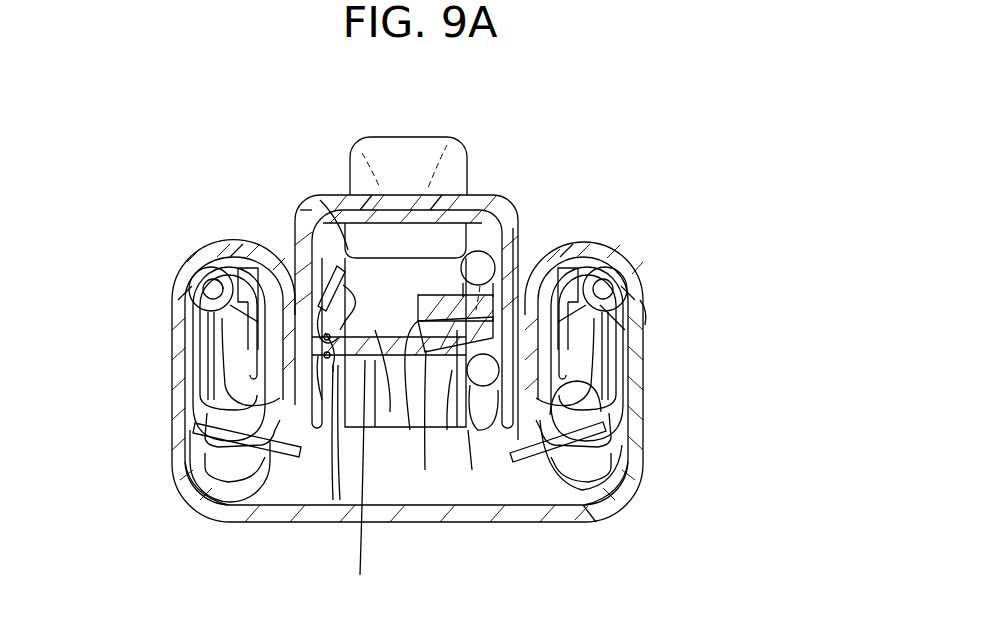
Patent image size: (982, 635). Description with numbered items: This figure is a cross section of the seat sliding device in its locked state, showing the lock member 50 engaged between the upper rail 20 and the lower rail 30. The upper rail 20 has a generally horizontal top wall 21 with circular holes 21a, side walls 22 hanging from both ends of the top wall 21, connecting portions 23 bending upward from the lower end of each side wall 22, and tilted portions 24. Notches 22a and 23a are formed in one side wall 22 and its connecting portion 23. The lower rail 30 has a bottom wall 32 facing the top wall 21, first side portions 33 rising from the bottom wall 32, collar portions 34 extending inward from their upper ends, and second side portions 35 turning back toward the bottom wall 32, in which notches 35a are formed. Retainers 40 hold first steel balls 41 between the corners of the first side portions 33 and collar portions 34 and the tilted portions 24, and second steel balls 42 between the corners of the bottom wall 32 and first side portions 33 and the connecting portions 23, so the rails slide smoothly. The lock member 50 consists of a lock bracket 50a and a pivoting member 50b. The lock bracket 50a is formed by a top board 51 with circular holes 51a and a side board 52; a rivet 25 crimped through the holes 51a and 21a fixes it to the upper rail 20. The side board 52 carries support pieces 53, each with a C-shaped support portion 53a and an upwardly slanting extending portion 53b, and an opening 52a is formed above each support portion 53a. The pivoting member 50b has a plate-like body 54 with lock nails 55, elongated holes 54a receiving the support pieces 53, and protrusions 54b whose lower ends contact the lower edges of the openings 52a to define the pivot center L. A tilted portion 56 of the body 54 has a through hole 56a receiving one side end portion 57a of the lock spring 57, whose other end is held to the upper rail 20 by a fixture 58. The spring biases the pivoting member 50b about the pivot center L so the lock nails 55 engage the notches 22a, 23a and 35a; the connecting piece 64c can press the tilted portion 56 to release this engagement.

The upper rail 20 is at (320, 117).
The top wall 21 is at (473, 198).
The circular holes 21a is at (372, 195).
The side walls 22 is at (250, 244).
The notches 22a is at (508, 440).
The connecting portions 23 is at (195, 428).
The notches 23a is at (635, 316).
The tilted portions 24 is at (192, 245).
The rivet 25 is at (405, 137).
The lower rail 30 is at (632, 514).
The bottom wall 32 is at (222, 520).
The first side portions 33 is at (172, 452).
The collar portions 34 is at (216, 266).
The second side portions 35 is at (238, 282).
The notches 35a is at (586, 508).
The retainers 40 is at (205, 330).
The first steel balls 41 is at (213, 258).
The second steel balls 42 is at (207, 490).
The lock member 50 is at (581, 126).
The lock bracket 50a is at (487, 220).
The pivoting member 50b is at (522, 240).
The top board 51 is at (350, 225).
The circular holes 51a is at (432, 190).
The side board 52 is at (320, 200).
The opening 52a is at (303, 250).
The support pieces 53 is at (268, 533).
The support portion 53a is at (333, 500).
The extending portion 53b is at (340, 500).
The plate-like body 54 is at (356, 360).
The elongated holes 54a is at (322, 362).
The protrusions 54b is at (322, 350).
The lock nails 55 is at (647, 298).
The tilted portion 56 is at (425, 470).
The through hole 56a is at (447, 430).
The lock spring 57 is at (492, 435).
The one side end portion 57a is at (478, 470).
The fixture 58 is at (390, 412).
The connecting piece 64c is at (410, 430).
The pivot center L is at (312, 355).